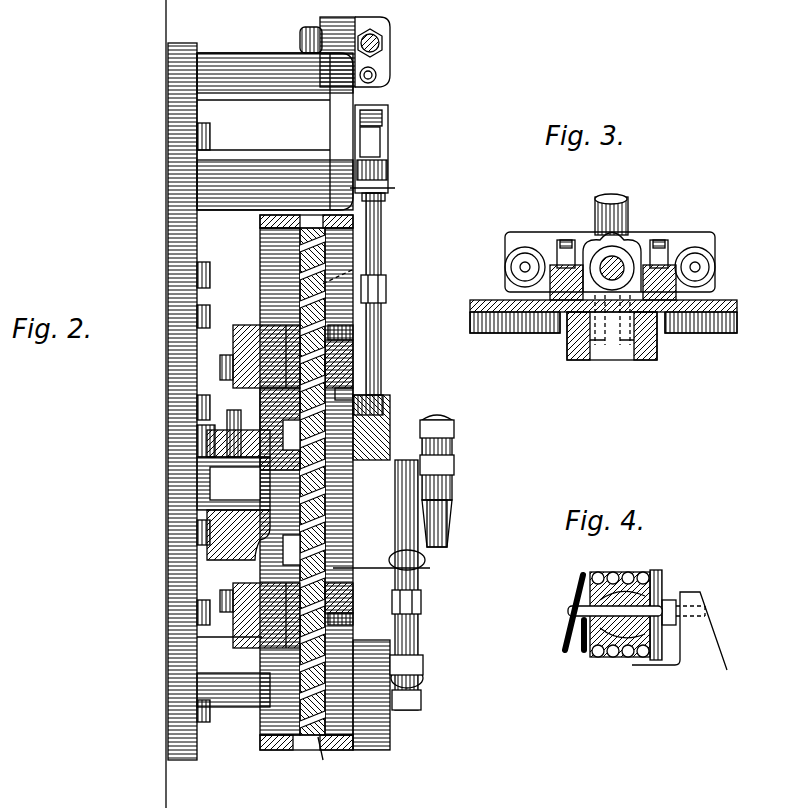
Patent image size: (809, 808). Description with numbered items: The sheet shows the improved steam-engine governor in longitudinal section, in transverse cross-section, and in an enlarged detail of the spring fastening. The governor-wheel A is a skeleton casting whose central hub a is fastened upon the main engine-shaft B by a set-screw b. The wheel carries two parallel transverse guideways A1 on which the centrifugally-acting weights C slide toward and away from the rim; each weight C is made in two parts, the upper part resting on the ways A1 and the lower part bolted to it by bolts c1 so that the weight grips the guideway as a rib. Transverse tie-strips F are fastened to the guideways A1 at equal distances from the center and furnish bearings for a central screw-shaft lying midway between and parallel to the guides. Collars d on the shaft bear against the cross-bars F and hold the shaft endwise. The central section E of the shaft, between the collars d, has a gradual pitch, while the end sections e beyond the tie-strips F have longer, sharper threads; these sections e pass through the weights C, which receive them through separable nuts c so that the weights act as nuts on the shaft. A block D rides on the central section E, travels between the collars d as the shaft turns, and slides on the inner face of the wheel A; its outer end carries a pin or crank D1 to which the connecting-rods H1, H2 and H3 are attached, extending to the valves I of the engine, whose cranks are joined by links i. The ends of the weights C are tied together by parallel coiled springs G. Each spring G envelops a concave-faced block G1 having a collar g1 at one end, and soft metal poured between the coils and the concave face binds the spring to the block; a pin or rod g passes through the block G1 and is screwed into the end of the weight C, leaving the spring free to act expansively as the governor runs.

In FIG. 2, the governor-wheel A is at (262, 224).
In FIG. 3, the transverse guideway A1 is at (668, 327).
In FIG. 2, the central hub a is at (263, 532).
In FIG. 3, the central hub a is at (617, 350).
In FIG. 2, the main engine-shaft B is at (205, 463).
In FIG. 2, the set-screw b is at (205, 438).
In FIG. 2, the weight C is at (270, 630).
In FIG. 3, the weight C is at (518, 238).
In FIG. 4, the weight C is at (679, 631).
In FIG. 2, the separable block or nut c is at (326, 640).
In FIG. 2, the bolt c1 is at (228, 592).
In FIG. 2, the block D is at (388, 408).
In FIG. 3, the block D is at (624, 238).
In FIG. 2, the pin or crank D1 is at (455, 463).
In FIG. 2, the collar d is at (278, 416).
In FIG. 2, the central section of screw-shaft E is at (324, 520).
In FIG. 3, the central section of screw-shaft E is at (612, 256).
In FIG. 2, the end section of screw-shaft e is at (352, 270).
In FIG. 2, the transverse bar or tie-strip F is at (345, 392).
In FIG. 3, the transverse bar or tie-strip F is at (640, 262).
In FIG. 3, the post f is at (662, 242).
In FIG. 3, the coiled spring G is at (712, 262).
In FIG. 4, the coiled spring G is at (566, 656).
In FIG. 3, the block G1 is at (705, 275).
In FIG. 4, the block G1 is at (622, 657).
In FIG. 3, the pin or rod g is at (526, 262).
In FIG. 4, the pin or rod g is at (570, 611).
In FIG. 3, the collar or disk g1 is at (700, 268).
In FIG. 4, the collar or disk g1 is at (660, 577).
In FIG. 2, the connecting-rod H1 is at (383, 320).
In FIG. 2, the connecting-rod H2 is at (453, 523).
In FIG. 2, the connecting-rod H3 is at (413, 640).
In FIG. 2, the valve I is at (385, 141).
In FIG. 2, the link i is at (382, 45).